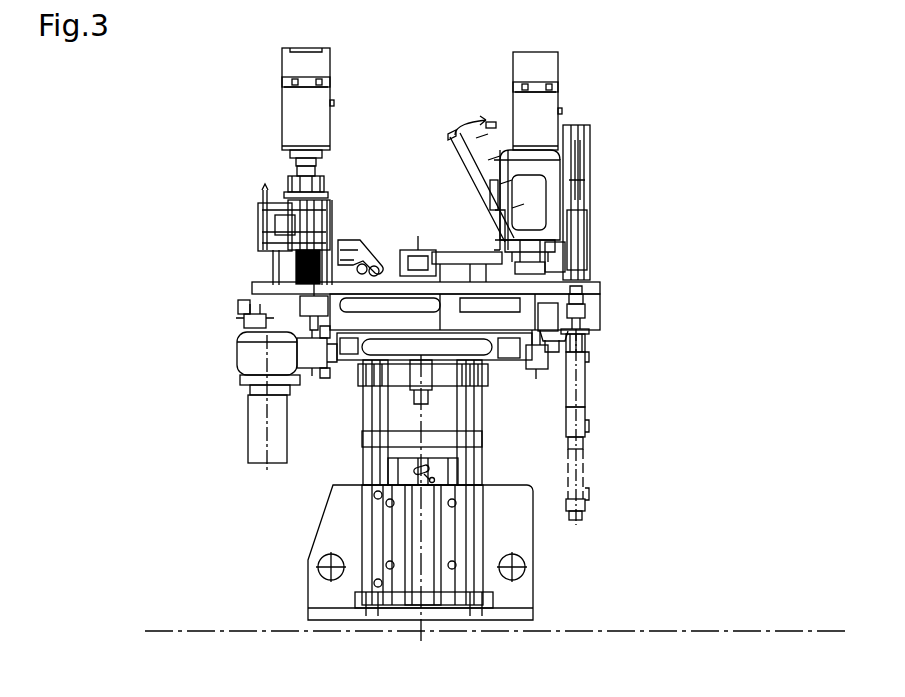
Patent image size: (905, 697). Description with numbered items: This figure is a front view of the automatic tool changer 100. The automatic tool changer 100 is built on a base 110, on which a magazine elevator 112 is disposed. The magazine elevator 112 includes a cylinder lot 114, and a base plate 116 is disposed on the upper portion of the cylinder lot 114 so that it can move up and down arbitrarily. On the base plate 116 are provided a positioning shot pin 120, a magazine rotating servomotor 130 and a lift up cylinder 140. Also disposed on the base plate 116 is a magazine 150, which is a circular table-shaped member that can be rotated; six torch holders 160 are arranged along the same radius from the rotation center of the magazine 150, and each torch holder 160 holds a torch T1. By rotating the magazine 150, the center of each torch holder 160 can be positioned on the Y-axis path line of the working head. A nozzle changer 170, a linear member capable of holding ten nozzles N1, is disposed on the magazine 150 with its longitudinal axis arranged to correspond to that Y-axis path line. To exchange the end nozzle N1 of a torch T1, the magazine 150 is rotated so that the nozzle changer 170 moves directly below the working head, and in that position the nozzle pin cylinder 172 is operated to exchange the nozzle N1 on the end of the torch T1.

The automatic tool changer 100 is at (689, 180).
The base 110 is at (328, 597).
The magazine elevator 112 is at (457, 538).
The cylinder lot 114 is at (418, 420).
The base plate 116 is at (507, 356).
The positioning shot pin 120 is at (560, 311).
The magazine rotating servomotor 130 is at (257, 428).
The lift up cylinder 140 is at (577, 380).
The magazine 150 is at (256, 289).
The torch holder 160 is at (562, 167).
The nozzle changer 170 is at (260, 212).
The nozzle pin cylinder 172 is at (348, 235).
The torch T1 is at (287, 124).
The nozzle N1 is at (290, 167).